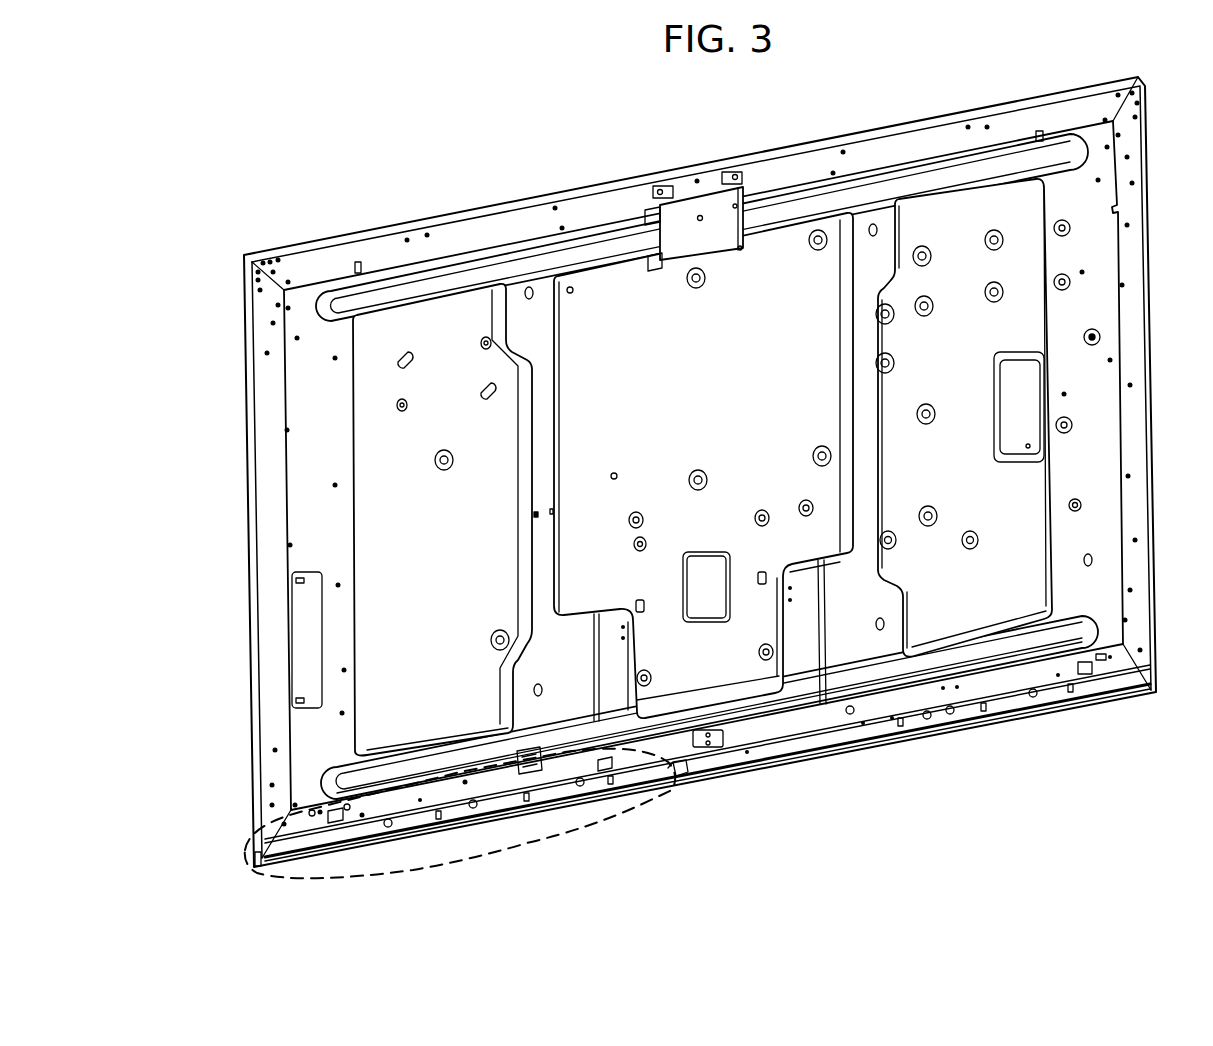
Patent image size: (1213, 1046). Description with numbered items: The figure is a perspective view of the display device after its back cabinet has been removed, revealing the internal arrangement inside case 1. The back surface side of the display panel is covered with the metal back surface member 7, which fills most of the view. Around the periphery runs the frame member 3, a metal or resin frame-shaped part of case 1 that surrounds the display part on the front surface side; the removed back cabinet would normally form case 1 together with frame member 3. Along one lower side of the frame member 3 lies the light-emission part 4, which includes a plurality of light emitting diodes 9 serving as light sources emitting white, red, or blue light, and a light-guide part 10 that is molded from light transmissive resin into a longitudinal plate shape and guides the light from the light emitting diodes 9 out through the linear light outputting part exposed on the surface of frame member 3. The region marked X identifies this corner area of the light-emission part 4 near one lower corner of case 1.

The case 1 is at (736, 148).
The frame member 3 is at (345, 216).
The light-emission part 4 is at (262, 840).
The back surface member 7 is at (1078, 249).
The light emitting diodes 9 is at (527, 800).
The light-guide part 10 is at (656, 771).
The detail region X is at (640, 805).